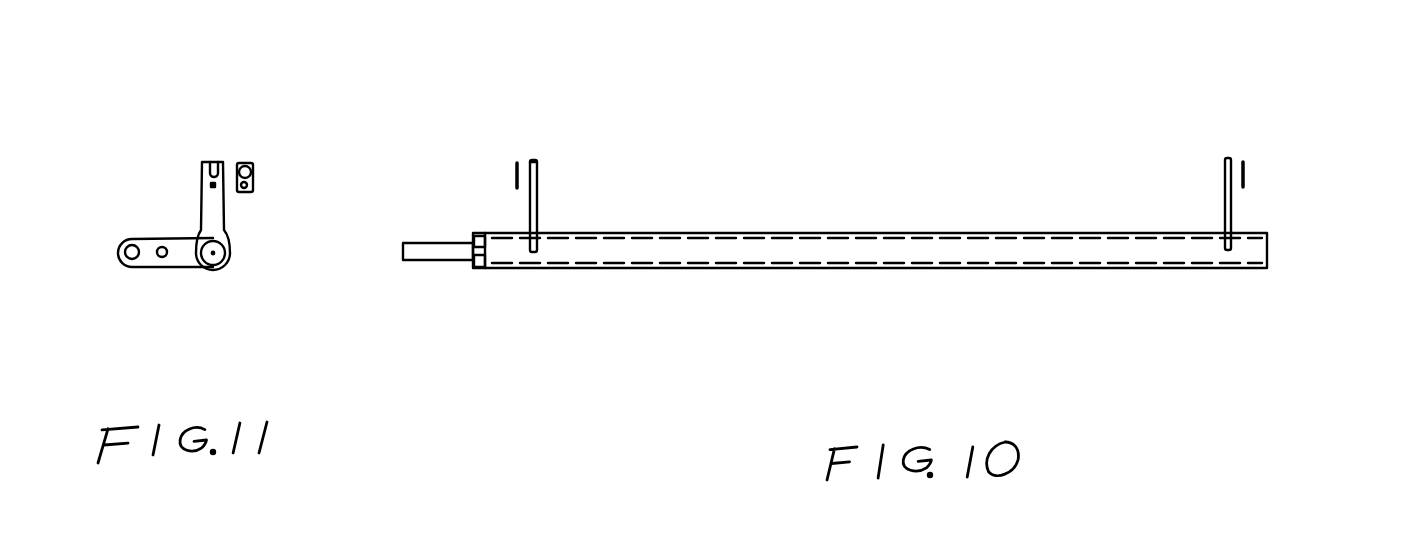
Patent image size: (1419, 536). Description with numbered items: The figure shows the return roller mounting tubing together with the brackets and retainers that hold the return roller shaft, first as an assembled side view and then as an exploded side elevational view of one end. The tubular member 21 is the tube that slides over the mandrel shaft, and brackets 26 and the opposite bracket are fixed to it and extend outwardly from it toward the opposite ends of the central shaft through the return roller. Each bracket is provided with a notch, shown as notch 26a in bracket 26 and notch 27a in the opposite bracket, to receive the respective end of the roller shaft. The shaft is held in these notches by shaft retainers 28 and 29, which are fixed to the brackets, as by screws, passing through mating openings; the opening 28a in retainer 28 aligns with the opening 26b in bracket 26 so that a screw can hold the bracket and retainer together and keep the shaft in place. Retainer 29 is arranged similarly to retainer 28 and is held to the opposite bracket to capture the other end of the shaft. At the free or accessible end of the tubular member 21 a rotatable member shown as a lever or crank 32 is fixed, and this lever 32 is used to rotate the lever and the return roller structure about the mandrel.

In FIG. 10, the tubular member 21 is at (858, 327).
In FIG. 11, the bracket 26 is at (257, 212).
In FIG. 10, the bracket 26 is at (618, 182).
In FIG. 11, the notch 26a is at (275, 108).
In FIG. 10, the notch 26a is at (595, 90).
In FIG. 11, the opening 26b is at (205, 189).
In FIG. 10, the notch 27a is at (1203, 100).
In FIG. 11, the shaft retainer 28 is at (293, 142).
In FIG. 10, the shaft retainer 28 is at (517, 178).
In FIG. 11, the opening 28a is at (293, 173).
In FIG. 10, the shaft retainer 29 is at (1305, 163).
In FIG. 11, the lever 32 is at (160, 323).